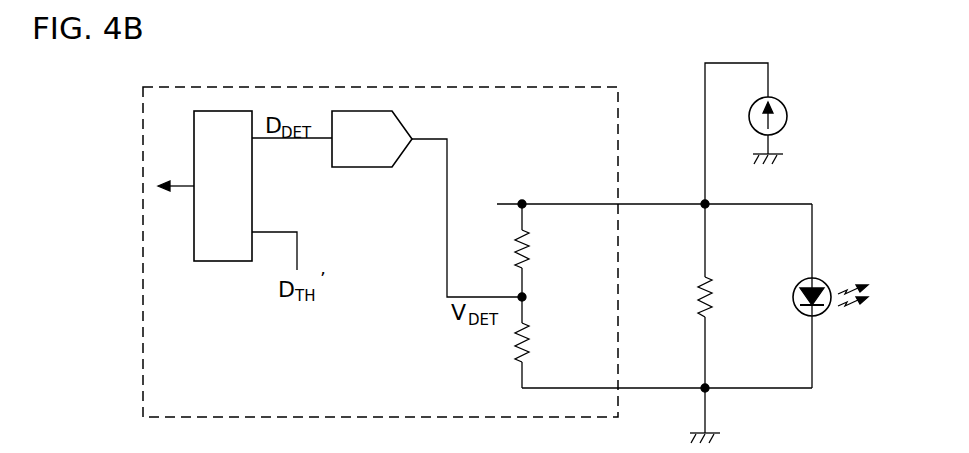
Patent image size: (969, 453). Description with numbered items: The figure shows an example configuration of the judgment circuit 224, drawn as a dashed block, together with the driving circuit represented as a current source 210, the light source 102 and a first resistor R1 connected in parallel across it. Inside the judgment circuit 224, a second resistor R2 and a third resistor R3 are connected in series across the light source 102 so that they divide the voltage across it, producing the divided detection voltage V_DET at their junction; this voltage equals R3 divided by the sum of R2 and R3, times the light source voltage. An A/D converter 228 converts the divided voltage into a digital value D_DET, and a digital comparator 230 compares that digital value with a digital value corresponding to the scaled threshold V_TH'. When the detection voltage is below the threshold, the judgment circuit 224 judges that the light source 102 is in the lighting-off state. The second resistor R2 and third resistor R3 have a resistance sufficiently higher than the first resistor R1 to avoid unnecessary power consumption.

The judgment circuit 224 is at (452, 87).
The A/D converter 228 is at (367, 167).
The digital comparator 230 is at (222, 261).
The current source 210 is at (788, 114).
The light source 102 is at (822, 278).
The first resistor R1 is at (695, 295).
The second resistor R2 is at (537, 251).
The third resistor R3 is at (537, 346).